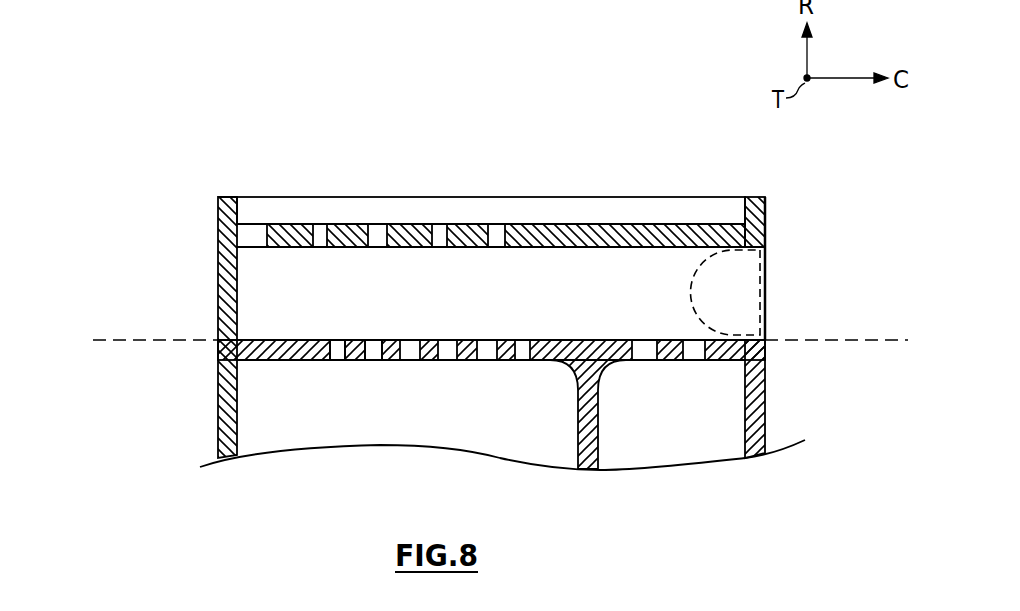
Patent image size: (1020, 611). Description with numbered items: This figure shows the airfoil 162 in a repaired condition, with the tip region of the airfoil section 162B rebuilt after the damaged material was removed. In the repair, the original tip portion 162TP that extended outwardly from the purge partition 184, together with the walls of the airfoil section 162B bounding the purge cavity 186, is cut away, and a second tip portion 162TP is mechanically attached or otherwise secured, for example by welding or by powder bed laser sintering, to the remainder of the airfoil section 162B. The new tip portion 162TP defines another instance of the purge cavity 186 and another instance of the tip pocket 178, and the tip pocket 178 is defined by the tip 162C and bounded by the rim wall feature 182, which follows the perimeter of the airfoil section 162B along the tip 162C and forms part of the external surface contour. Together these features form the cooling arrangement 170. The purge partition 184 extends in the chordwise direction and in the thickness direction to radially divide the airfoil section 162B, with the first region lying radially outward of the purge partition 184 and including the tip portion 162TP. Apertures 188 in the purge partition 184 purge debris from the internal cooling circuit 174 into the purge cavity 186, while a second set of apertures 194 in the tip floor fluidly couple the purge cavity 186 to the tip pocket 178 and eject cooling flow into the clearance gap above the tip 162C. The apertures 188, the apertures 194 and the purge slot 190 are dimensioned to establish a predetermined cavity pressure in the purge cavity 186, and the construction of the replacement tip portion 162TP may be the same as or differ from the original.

The airfoil 162 is at (157, 90).
The tip portion 162TP is at (208, 255).
The airfoil section 162B is at (121, 369).
The tip 162C is at (313, 197).
The cooling arrangement 170 is at (815, 233).
The internal cooling circuit 174 is at (372, 432).
The tip pocket 178 is at (590, 210).
The rim wall feature 182 is at (232, 197).
The purge partition 184 is at (395, 352).
The purge cavity 186 is at (465, 342).
The apertures 188 is at (372, 352).
The purge slot 190 is at (765, 292).
The apertures 194 is at (378, 232).